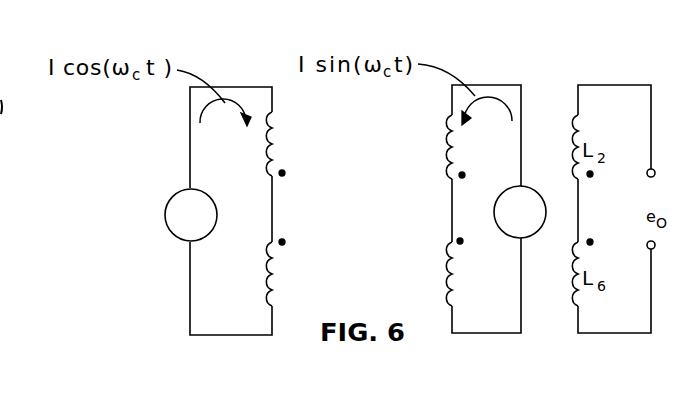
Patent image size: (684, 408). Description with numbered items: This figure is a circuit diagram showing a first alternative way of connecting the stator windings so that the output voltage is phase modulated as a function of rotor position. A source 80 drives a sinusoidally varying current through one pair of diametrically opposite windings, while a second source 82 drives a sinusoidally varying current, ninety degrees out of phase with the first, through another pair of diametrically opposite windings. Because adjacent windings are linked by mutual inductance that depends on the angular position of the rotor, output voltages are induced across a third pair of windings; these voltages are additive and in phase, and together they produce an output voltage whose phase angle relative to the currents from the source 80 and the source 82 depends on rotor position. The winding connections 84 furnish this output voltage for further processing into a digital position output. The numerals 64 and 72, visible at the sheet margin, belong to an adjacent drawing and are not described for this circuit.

The source 80 is at (205, 229).
The source 82 is at (534, 228).
The winding connections 84 is at (670, 107).
The component 64 (partial, lower figure) 64 is at (163, 407).
The component 72 (partial, lower figure) 72 is at (401, 407).